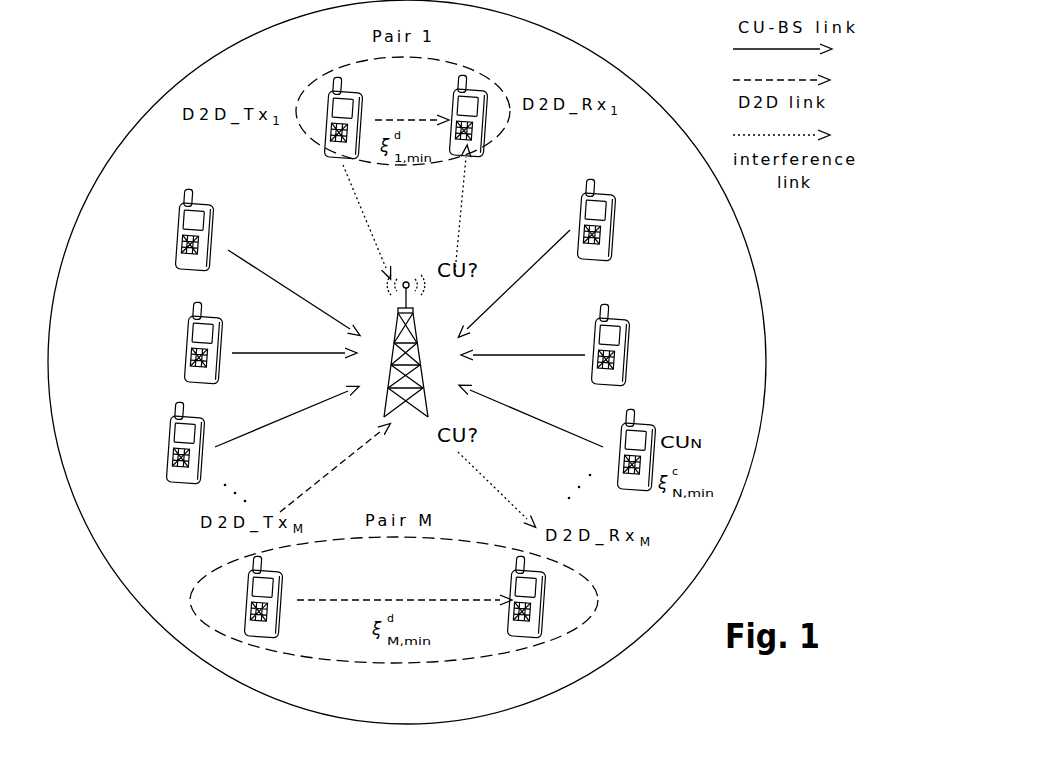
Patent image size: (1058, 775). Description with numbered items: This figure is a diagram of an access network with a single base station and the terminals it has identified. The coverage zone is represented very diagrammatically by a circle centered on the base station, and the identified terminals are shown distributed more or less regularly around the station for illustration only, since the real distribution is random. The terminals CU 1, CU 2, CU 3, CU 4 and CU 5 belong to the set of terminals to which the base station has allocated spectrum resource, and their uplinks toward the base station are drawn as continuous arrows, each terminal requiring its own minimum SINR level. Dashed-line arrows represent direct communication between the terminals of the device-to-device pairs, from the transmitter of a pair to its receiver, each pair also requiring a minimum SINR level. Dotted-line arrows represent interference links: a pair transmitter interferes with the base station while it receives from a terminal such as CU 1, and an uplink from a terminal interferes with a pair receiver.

The terminal CU 1 is at (638, 347).
The terminal CU 2 is at (625, 223).
The terminal CU 3 is at (163, 230).
The terminal CU 4 is at (170, 342).
The terminal CU 5 is at (154, 443).